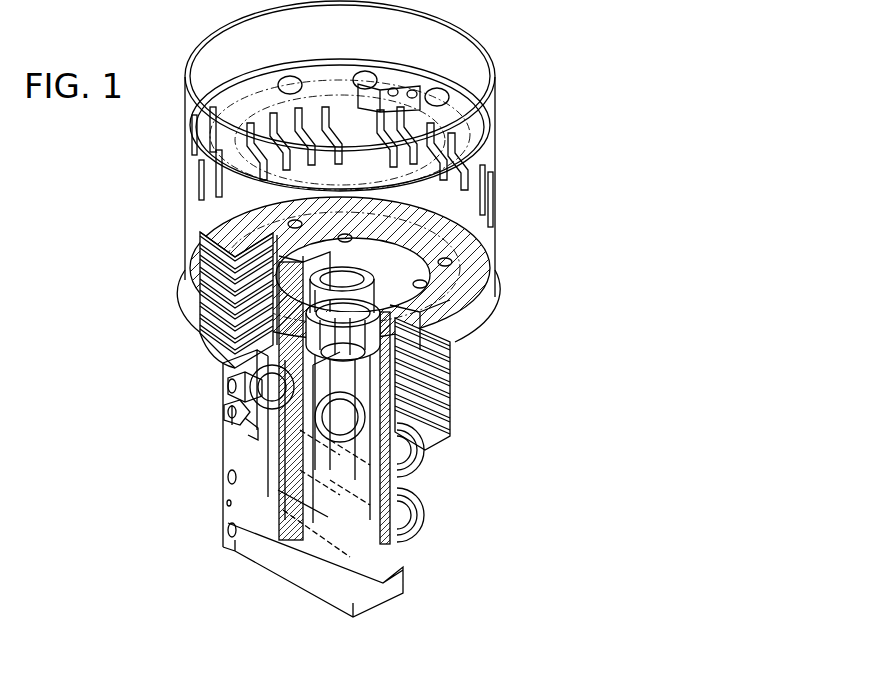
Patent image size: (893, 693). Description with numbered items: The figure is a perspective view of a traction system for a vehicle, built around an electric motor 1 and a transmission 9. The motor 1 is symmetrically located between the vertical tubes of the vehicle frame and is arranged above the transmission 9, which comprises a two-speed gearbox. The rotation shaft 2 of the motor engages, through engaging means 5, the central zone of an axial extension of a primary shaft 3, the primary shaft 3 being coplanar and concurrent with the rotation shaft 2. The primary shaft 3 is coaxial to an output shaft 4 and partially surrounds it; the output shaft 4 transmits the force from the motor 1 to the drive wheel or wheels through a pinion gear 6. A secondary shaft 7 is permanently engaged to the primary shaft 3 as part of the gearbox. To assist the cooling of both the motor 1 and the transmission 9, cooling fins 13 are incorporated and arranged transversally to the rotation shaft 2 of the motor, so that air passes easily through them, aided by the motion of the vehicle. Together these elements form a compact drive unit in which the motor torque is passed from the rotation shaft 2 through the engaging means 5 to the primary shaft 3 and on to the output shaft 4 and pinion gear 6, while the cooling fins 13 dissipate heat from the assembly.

The motor 1 is at (178, 107).
The rotation shaft 2 is at (370, 288).
The primary shaft 3 is at (445, 415).
The output shaft 4 is at (228, 385).
The engaging means 5 is at (370, 372).
The pinion gear 6 is at (224, 412).
The secondary shaft 7 is at (222, 522).
The transmission 9 is at (288, 560).
The cooling fins 13 is at (200, 288).